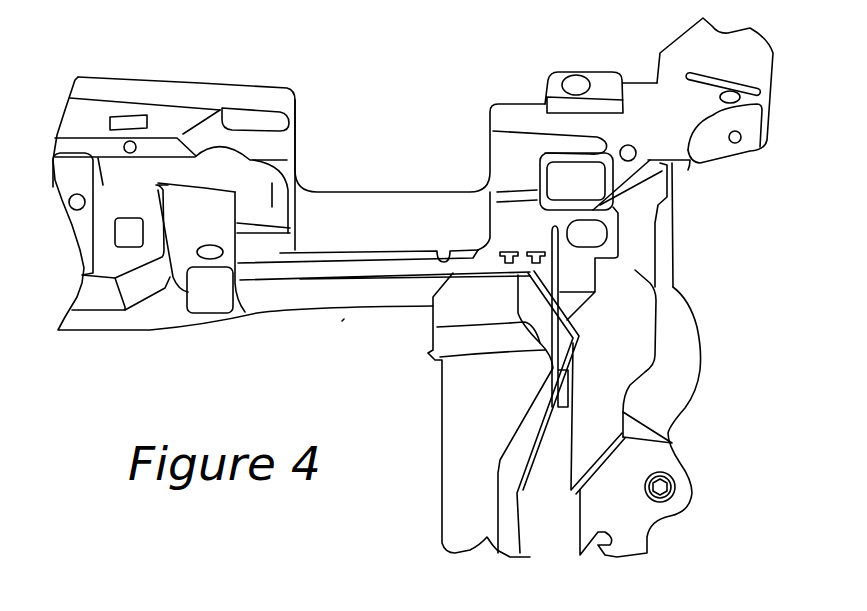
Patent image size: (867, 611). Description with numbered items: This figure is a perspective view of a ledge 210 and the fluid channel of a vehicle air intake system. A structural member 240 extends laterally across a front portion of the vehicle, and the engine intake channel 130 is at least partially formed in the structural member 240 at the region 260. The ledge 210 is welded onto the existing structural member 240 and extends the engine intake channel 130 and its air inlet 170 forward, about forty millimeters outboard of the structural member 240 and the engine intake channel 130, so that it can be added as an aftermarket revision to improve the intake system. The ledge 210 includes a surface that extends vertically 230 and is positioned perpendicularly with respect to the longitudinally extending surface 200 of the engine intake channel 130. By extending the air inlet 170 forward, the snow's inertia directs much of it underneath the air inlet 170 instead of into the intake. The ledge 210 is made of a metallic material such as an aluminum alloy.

The engine intake channel 130 is at (334, 203).
The air inlet 170 is at (348, 267).
The longitudinally extending surface 200 is at (428, 235).
The ledge 210 is at (343, 322).
The vertically extending surface 230 is at (397, 302).
The structural member 240 is at (680, 283).
The portion of structural member forming intake channel 260 is at (303, 253).